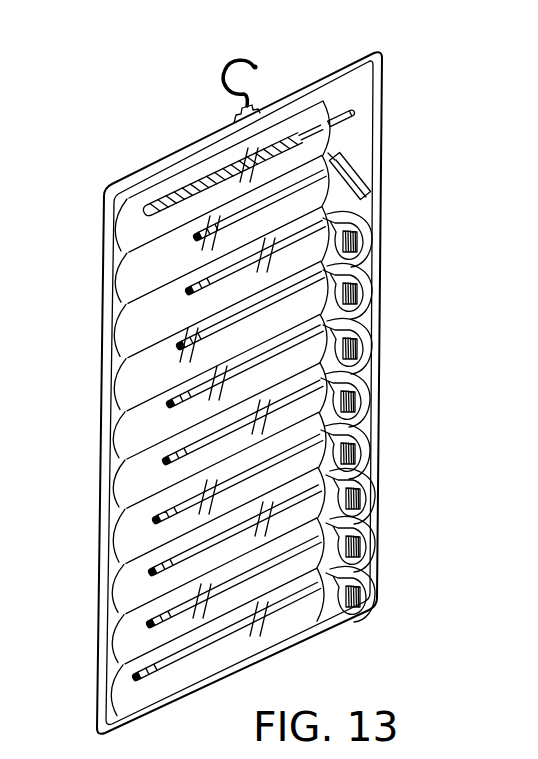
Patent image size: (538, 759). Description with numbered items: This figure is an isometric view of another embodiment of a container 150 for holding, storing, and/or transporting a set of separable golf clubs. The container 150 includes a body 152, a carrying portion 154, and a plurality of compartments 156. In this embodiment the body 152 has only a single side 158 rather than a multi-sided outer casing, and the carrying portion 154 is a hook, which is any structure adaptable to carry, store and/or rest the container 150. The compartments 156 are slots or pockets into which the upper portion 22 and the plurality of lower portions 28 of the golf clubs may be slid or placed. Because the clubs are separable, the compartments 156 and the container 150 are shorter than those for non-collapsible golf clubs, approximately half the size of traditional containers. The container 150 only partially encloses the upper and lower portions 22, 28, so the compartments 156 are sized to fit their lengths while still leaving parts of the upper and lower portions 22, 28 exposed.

The container 150 is at (482, 146).
The body 152 is at (100, 414).
The carrying portion 154 is at (226, 84).
The compartments 156 is at (128, 360).
The side 158 is at (133, 175).
The upper portion 22 is at (358, 114).
The lower portions 28 is at (372, 178).